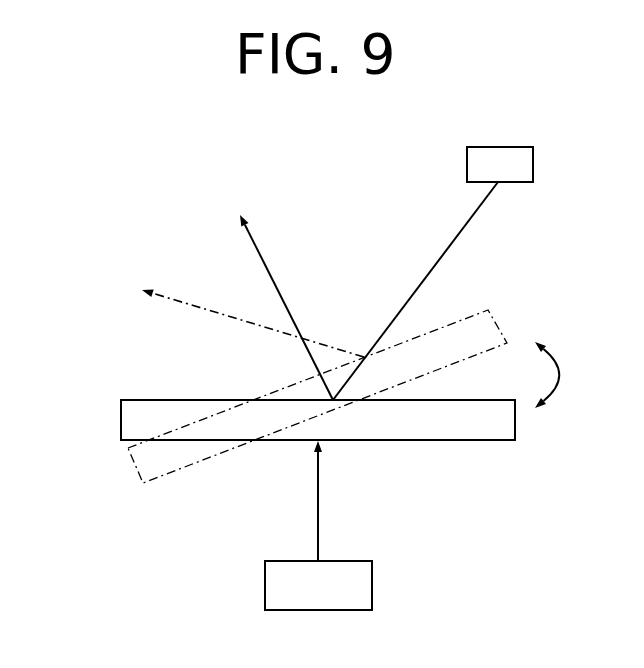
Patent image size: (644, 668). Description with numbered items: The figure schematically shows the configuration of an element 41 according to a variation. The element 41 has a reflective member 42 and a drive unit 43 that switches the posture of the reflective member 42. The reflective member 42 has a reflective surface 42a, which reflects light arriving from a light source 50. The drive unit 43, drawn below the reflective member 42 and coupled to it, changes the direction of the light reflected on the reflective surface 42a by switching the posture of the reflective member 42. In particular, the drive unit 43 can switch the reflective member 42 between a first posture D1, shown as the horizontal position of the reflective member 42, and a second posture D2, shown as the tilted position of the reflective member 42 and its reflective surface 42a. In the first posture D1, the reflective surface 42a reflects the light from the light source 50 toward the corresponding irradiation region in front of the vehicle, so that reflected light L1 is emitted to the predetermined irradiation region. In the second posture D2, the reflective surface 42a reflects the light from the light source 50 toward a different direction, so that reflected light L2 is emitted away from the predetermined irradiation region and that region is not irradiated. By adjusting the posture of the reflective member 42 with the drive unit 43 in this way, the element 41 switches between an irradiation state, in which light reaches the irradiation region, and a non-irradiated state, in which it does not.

The element 41 is at (108, 374).
The reflective member 42 is at (515, 425).
The reflective surface 42a is at (460, 322).
The drive unit 43 is at (372, 583).
The light source 50 is at (533, 162).
The reflected light L1 is at (268, 263).
The reflected light L2 is at (193, 303).
The first posture D1 is at (109, 420).
The second posture D2 is at (133, 486).